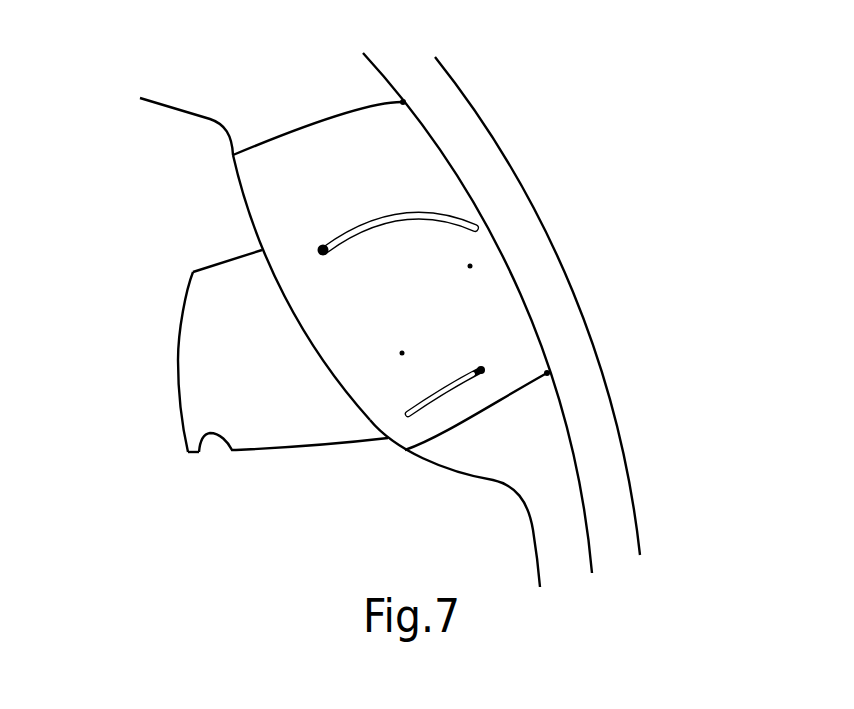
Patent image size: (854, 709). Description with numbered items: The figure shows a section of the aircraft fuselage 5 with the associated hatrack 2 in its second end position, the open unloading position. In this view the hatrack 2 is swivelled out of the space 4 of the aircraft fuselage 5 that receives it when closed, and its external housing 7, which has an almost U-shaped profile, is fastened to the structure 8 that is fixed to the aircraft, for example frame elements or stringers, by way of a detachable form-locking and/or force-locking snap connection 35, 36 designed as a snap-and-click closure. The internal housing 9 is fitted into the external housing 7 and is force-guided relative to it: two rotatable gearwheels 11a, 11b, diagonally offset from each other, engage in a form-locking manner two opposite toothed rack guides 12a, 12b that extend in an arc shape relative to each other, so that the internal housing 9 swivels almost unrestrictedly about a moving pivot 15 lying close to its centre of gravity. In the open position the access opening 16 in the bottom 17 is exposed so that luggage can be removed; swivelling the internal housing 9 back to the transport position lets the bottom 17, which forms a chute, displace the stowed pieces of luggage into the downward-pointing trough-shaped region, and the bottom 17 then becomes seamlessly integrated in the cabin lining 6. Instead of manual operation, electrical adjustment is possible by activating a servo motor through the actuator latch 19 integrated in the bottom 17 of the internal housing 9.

The hatrack 2 is at (222, 185).
The space 4 is at (559, 520).
The aircraft fuselage 5 is at (645, 488).
The cabin lining 6 is at (163, 105).
The external housing 7 is at (470, 266).
The structure 8 is at (592, 560).
The internal housing 9 is at (168, 418).
The gearwheel 11a is at (481, 369).
The gearwheel 11b is at (323, 250).
The toothed rack guide 12a is at (460, 398).
The toothed rack guide 12b is at (432, 212).
The moving pivot 15 is at (402, 353).
The access opening 16 is at (178, 344).
The bottom 17 is at (318, 448).
The actuator latch 19 is at (215, 448).
The snap connection 35 is at (403, 102).
The snap connection 36 is at (547, 373).